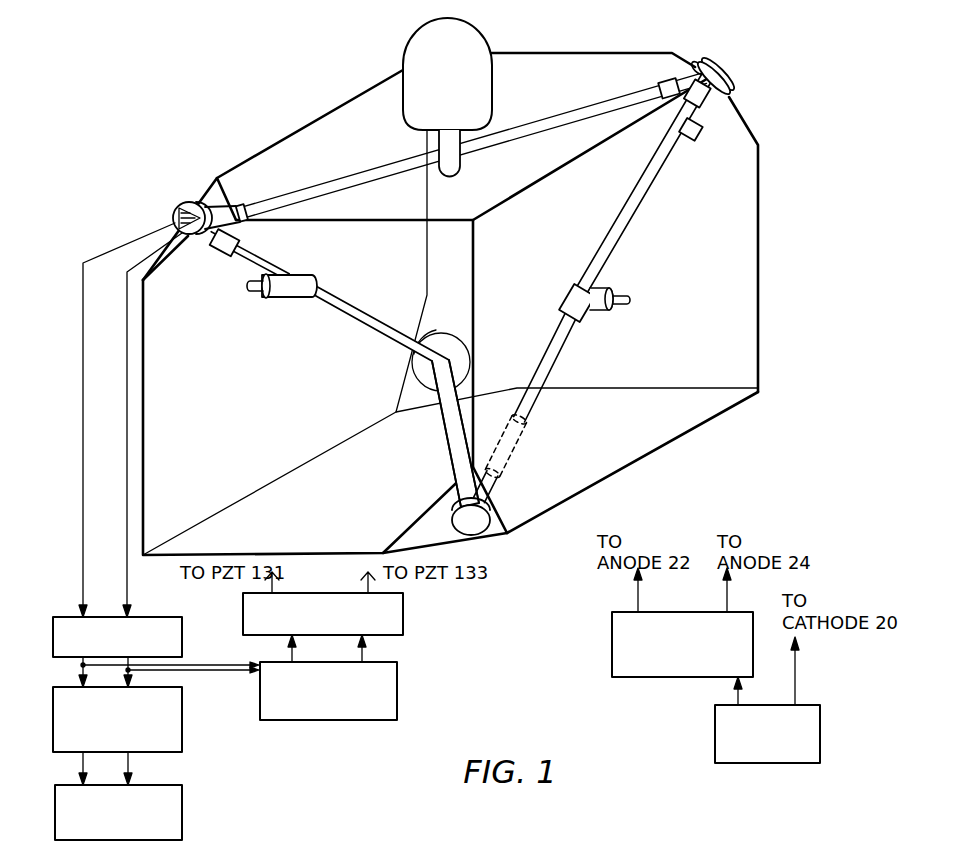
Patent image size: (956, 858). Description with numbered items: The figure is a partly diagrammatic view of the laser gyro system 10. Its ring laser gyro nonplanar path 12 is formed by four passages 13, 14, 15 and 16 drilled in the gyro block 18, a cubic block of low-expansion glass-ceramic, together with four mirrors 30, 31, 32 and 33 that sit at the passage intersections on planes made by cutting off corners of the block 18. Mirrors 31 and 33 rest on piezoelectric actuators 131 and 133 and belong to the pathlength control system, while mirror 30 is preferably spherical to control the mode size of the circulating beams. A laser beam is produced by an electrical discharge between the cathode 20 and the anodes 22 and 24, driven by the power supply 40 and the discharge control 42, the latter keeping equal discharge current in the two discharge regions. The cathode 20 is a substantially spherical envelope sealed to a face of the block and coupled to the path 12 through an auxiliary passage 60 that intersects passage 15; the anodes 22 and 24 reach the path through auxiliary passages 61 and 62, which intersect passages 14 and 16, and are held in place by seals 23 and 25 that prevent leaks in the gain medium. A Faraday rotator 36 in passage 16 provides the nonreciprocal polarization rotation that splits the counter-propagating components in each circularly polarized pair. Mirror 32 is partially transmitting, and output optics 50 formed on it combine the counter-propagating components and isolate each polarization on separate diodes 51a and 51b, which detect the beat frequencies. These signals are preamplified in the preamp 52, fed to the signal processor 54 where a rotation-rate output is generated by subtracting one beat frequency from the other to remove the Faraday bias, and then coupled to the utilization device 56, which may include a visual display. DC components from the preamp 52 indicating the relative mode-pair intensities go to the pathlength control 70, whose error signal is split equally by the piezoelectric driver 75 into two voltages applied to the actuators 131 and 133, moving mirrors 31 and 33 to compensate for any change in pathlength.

The laser gyro system 10 is at (770, 454).
The ring laser gyro nonplanar path 12 is at (471, 290).
The passage 13 is at (447, 433).
The passage 14 is at (385, 337).
The passage 15 is at (573, 112).
The passage 16 is at (648, 193).
The gyro block 18 is at (606, 466).
The cathode 20 is at (487, 34).
The anode 22 is at (247, 288).
The seal 23 is at (263, 298).
The anode 24 is at (630, 304).
The seal 25 is at (613, 290).
The mirror 30 is at (478, 526).
The mirror 31 is at (460, 352).
The output mirror 32 is at (183, 234).
The mirror 33 is at (695, 66).
The Faraday rotator 36 is at (528, 435).
The power supply 40 is at (820, 708).
The discharge control 42 is at (612, 612).
The output optics 50 is at (187, 203).
The diode 51a is at (188, 202).
The diode 51b is at (172, 218).
The preamp 52 is at (181, 617).
The signal processor 54 is at (183, 704).
The utilization device 56 is at (183, 788).
The auxiliary passage 60 is at (462, 163).
The auxiliary passage 61 is at (307, 273).
The auxiliary passage 62 is at (570, 298).
The pathlength control 70 is at (397, 669).
The piezoelectric driver 75 is at (403, 609).
The piezoelectric actuator 131 is at (403, 385).
The piezoelectric actuator 133 is at (728, 74).